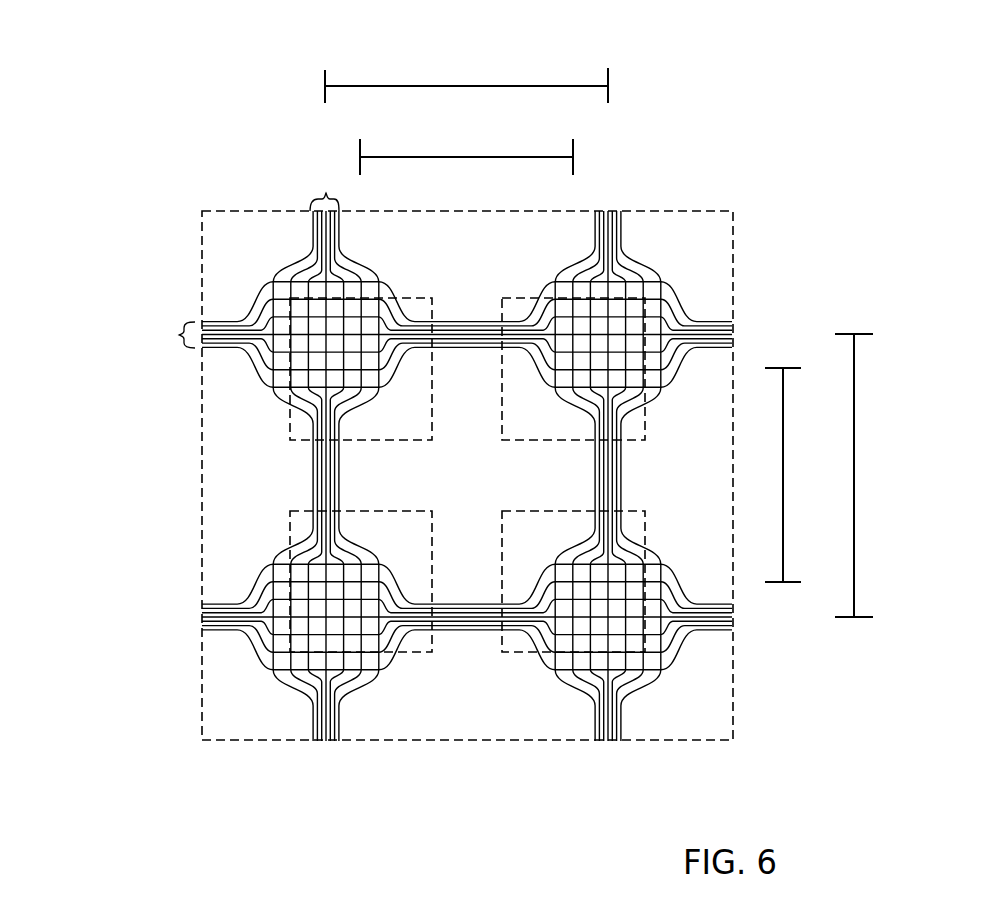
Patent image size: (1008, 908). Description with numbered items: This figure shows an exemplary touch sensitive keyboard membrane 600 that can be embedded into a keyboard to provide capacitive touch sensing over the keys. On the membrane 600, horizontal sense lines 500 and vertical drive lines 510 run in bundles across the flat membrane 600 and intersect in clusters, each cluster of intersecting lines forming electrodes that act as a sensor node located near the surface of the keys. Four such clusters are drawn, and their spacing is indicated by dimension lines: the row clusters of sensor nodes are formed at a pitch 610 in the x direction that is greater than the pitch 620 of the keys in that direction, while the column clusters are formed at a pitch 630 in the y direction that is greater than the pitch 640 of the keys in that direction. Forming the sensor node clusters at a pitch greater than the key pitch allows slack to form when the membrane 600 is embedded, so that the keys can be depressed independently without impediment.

The sense lines 500 is at (179, 336).
The drive lines 510 is at (325, 193).
The touch sensitive keyboard membrane 600 is at (238, 714).
The pitch 610 is at (378, 86).
The pitch 620 is at (525, 157).
The pitch 630 is at (854, 377).
The pitch 640 is at (783, 541).